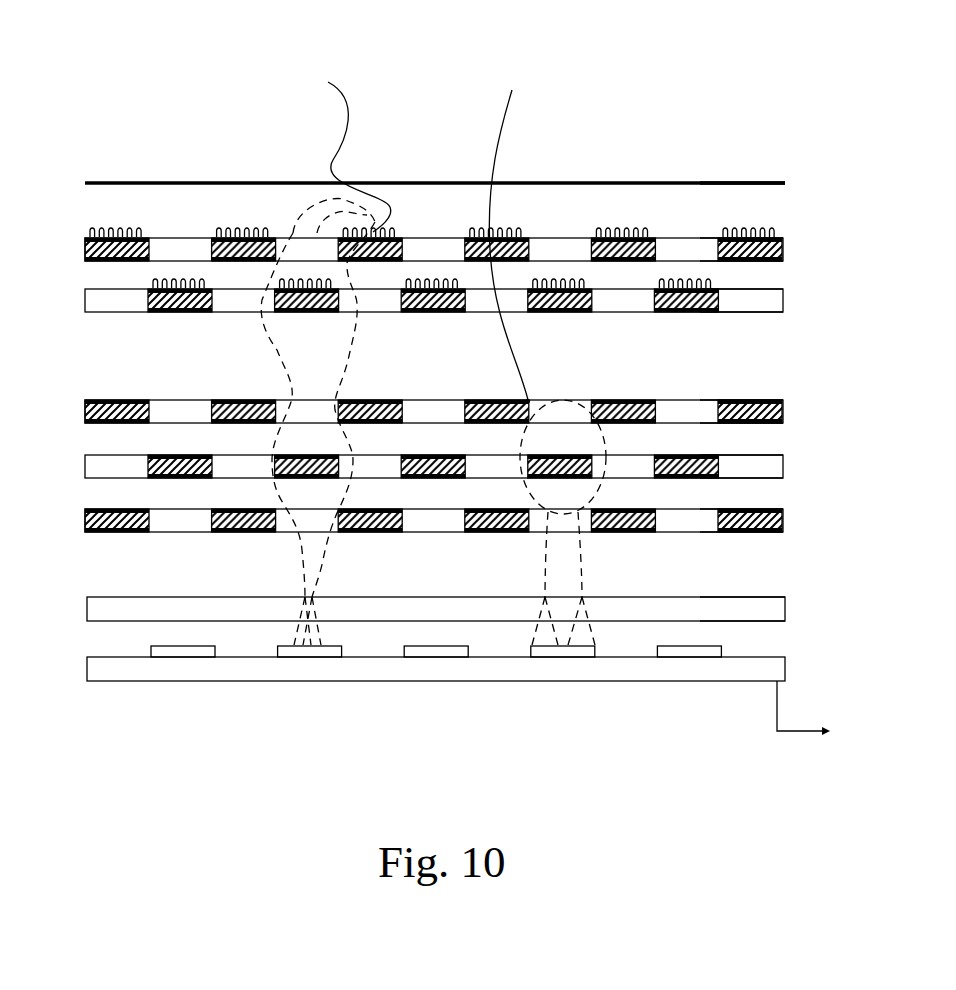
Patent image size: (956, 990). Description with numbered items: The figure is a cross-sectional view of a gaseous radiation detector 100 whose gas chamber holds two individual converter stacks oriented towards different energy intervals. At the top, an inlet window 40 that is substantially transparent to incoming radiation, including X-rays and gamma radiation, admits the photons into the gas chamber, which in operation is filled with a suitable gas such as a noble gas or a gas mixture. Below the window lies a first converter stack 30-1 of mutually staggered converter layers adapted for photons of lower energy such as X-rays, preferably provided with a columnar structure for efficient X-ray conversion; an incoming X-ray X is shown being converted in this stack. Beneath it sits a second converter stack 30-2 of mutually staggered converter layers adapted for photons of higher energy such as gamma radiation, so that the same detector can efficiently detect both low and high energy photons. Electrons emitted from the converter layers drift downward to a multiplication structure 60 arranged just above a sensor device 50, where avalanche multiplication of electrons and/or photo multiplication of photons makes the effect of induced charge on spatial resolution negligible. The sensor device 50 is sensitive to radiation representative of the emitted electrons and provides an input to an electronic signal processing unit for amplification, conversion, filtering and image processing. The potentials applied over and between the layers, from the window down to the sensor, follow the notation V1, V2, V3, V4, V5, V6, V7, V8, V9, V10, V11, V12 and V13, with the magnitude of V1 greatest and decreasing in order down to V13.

The radiation detector 100 is at (185, 82).
The inlet window 40 is at (85, 183).
The first converter stack 30-1 is at (85, 240).
The second converter stack 30-2 is at (85, 402).
The multiplication structure 60 is at (87, 605).
The sensor device 50 is at (87, 668).
The potential V1 is at (767, 183).
The potential V2 is at (783, 238).
The potential V3 is at (783, 261).
The potential V4 is at (783, 289).
The potential V5 is at (783, 312).
The potential V6 is at (783, 400).
The potential V7 is at (783, 423).
The potential V8 is at (783, 455).
The potential V9 is at (783, 478).
The potential V10 is at (783, 509).
The potential V11 is at (783, 532).
The potential V12 is at (785, 597).
The potential V13 is at (785, 621).
The X-ray X is at (325, 352).